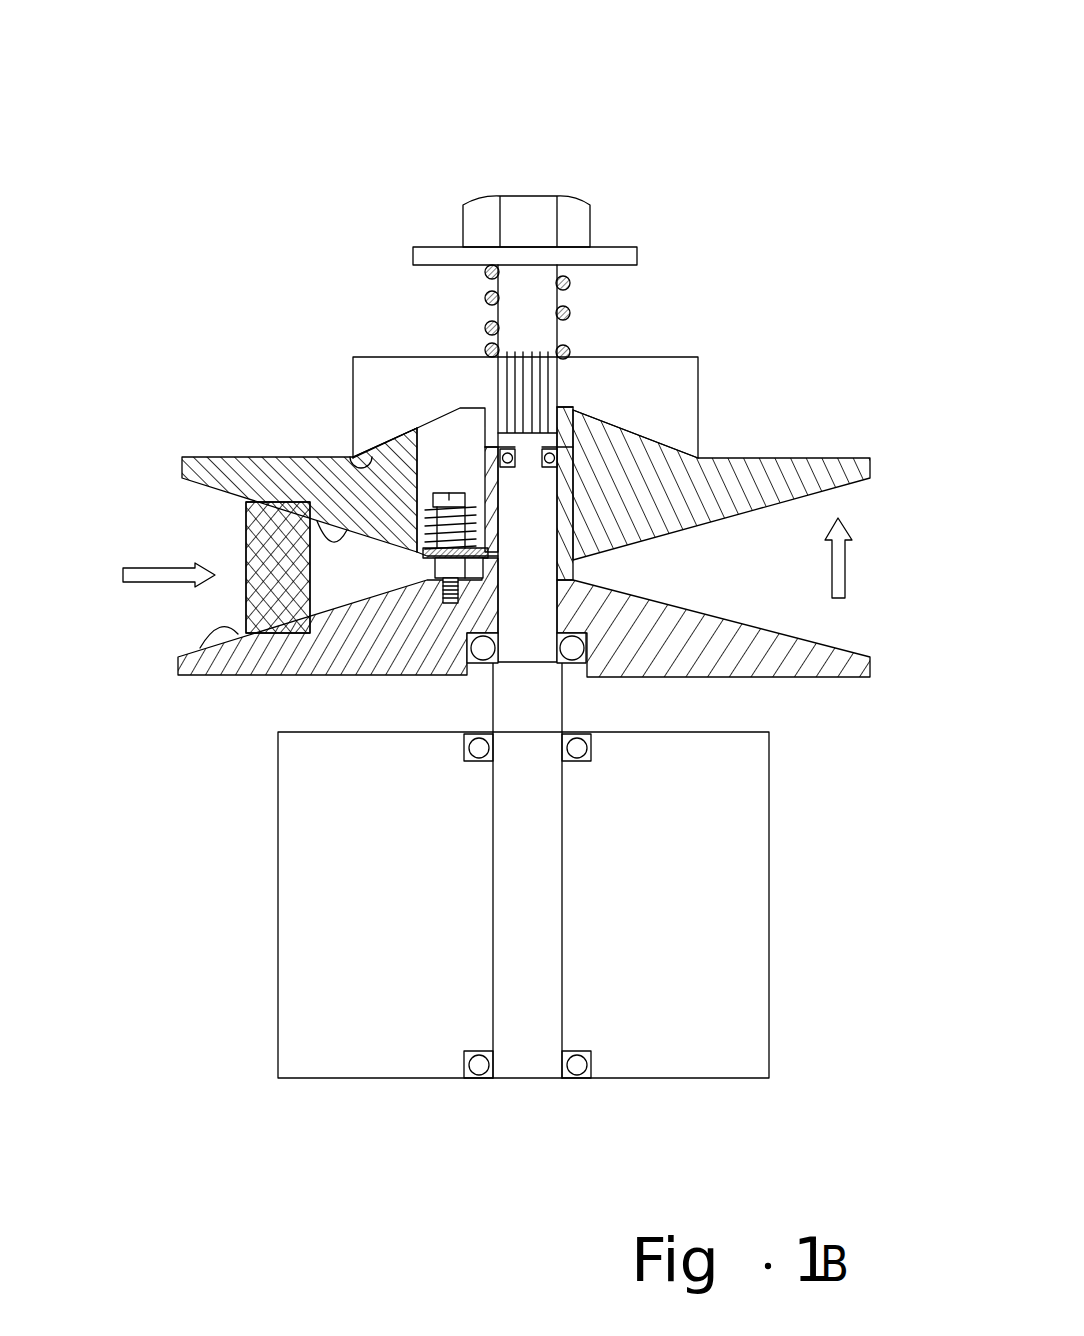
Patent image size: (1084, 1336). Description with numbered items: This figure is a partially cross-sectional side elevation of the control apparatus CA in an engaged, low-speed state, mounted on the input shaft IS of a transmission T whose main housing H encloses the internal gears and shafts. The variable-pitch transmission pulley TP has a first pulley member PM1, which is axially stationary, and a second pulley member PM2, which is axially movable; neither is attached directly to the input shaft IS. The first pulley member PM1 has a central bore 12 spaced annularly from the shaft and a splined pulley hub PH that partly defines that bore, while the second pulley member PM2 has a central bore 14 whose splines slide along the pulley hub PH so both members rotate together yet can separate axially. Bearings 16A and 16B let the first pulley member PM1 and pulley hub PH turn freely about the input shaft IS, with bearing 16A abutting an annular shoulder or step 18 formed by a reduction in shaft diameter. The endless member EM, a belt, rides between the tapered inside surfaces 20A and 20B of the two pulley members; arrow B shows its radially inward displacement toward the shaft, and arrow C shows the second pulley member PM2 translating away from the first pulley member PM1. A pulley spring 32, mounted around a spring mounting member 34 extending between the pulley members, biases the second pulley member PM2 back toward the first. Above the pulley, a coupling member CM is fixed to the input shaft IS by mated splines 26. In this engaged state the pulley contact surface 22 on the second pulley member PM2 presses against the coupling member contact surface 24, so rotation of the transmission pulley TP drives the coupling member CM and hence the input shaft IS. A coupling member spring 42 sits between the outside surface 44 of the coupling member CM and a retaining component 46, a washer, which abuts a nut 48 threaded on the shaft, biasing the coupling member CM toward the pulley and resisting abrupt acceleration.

The central bore 12 is at (560, 610).
The central bore 14 is at (573, 513).
The bearing 16A is at (585, 654).
The bearing 16B is at (553, 457).
The annular shoulder or step 18 is at (525, 662).
The inside surface 20A is at (205, 647).
The inside surface 20B is at (318, 518).
The pulley contact surface 22 is at (301, 460).
The coupling member contact surface 24 is at (405, 437).
The mated splines 26 is at (540, 383).
The pulley spring 32 is at (409, 456).
The spring mounting member 34 is at (447, 493).
The coupling member spring 42 is at (487, 298).
The outside surface 44 is at (564, 400).
The retaining component 46 is at (637, 253).
The nut 48 is at (590, 212).
The control apparatus CA is at (775, 127).
The coupling member CM is at (697, 357).
The first pulley member PM1 is at (182, 667).
The second pulley member PM2 is at (350, 455).
The endless member EM is at (246, 537).
The arrow B is at (160, 580).
The arrow C is at (830, 560).
The pulley hub PH is at (573, 566).
The transmission pulley TP is at (750, 546).
The main housing H is at (769, 855).
The input shaft IS is at (564, 948).
The transmission T is at (191, 1037).